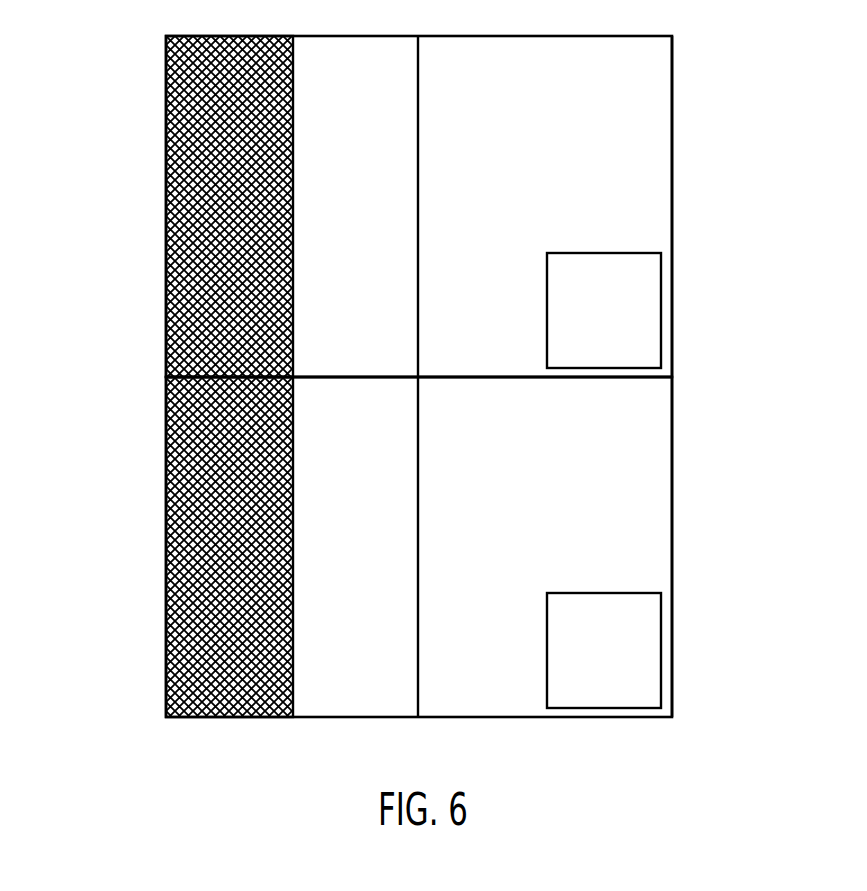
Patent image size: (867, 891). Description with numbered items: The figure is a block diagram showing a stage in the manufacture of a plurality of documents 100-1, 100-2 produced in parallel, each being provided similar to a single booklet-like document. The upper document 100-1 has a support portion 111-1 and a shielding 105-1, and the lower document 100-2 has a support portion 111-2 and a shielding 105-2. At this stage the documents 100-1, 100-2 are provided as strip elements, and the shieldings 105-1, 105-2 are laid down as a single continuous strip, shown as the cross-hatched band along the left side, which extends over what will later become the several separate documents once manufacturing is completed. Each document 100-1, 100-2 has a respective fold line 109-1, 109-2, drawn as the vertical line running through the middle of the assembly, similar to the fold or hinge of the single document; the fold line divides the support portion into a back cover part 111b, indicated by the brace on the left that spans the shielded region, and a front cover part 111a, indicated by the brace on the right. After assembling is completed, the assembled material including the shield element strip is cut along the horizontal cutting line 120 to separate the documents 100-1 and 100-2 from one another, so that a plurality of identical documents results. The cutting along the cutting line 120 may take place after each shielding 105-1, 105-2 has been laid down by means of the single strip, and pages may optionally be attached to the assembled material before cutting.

The document 100-1 is at (124, 168).
The document 100-2 is at (124, 508).
The shielding 105-1 is at (166, 226).
The shielding 105-2 is at (166, 566).
The fold line 109-1 is at (418, 112).
The fold line 109-2 is at (418, 452).
The support portion 111-1 is at (672, 212).
The support portion 111-2 is at (672, 552).
The front cover part 111a is at (672, 730).
The back cover part 111b is at (418, 730).
The cutting line 120 is at (688, 377).